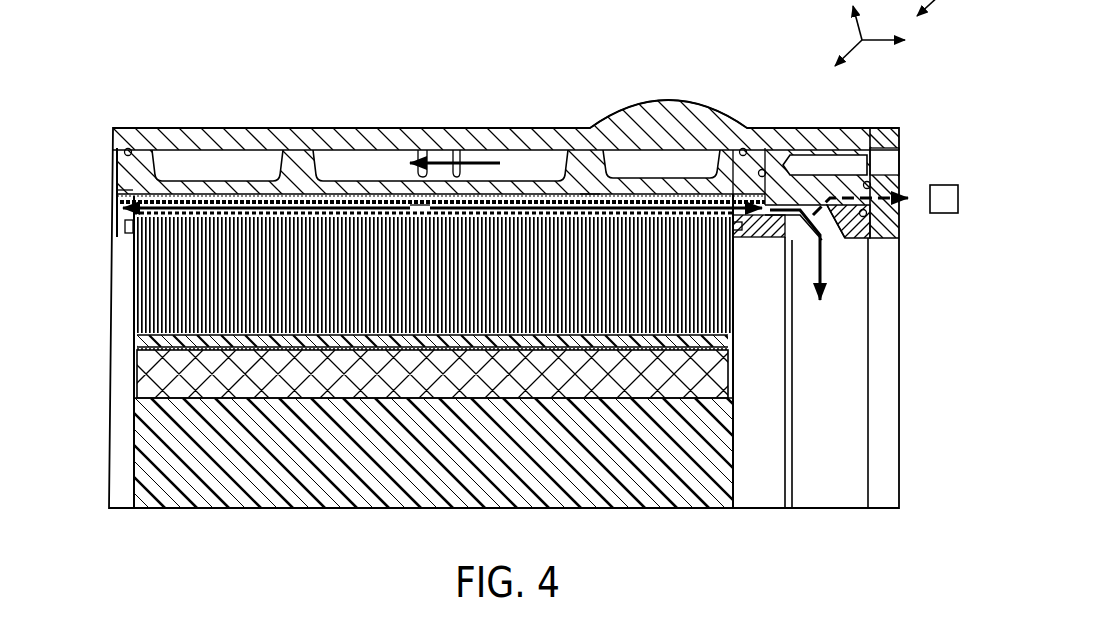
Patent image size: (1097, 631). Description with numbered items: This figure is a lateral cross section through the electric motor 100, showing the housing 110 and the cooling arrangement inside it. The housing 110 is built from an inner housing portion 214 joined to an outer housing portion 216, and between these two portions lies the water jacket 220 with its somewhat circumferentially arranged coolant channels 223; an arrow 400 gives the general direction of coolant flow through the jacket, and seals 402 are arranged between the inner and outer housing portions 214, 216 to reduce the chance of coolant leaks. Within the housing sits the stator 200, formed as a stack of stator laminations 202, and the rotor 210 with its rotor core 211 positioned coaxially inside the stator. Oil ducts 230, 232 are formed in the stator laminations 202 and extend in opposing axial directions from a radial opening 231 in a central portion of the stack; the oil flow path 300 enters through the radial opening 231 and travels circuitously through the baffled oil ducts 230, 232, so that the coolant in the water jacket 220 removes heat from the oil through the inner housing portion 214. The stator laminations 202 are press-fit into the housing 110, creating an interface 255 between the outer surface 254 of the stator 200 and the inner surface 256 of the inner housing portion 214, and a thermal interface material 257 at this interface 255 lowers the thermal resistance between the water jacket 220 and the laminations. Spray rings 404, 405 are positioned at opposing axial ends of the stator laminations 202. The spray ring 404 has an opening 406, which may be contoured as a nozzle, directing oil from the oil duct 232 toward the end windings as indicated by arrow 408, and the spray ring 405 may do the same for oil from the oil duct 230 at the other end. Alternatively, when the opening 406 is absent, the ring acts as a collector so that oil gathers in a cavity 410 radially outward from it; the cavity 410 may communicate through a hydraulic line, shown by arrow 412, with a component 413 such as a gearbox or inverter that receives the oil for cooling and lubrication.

The electric motor 100 is at (394, 68).
The housing 110 is at (118, 101).
The stator 200 is at (740, 316).
The stator laminations 202 is at (345, 280).
The rotor 210 is at (276, 490).
The rotor core 211 is at (143, 377).
The inner housing portion 214 is at (118, 172).
The outer housing portion 216 is at (175, 138).
The water jacket 220 is at (615, 146).
The coolant channels 223 is at (668, 160).
The oil duct 230 is at (302, 200).
The radial opening 231 is at (393, 165).
The oil duct 232 is at (512, 198).
The outer surface of the stator 254 is at (117, 195).
The interface 255 is at (123, 209).
The inner surface of the inner housing portion 256 is at (182, 214).
The thermal interface material 257 is at (588, 197).
The oil flow path 300 is at (432, 213).
The arrow 400 is at (430, 200).
The seals 402 is at (130, 148).
The spray ring 404 is at (860, 247).
The spray ring 405 is at (122, 235).
The opening 406 is at (805, 228).
The arrow 408 is at (840, 215).
The cavity 410 is at (810, 197).
The arrow 412 is at (910, 198).
The component 413 is at (940, 213).